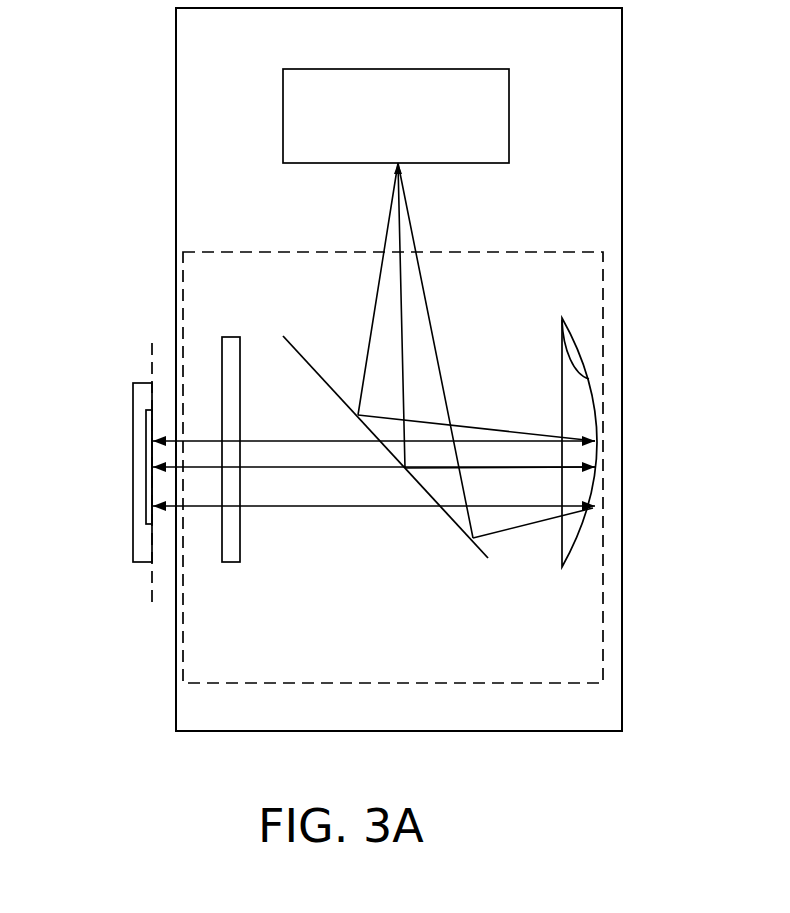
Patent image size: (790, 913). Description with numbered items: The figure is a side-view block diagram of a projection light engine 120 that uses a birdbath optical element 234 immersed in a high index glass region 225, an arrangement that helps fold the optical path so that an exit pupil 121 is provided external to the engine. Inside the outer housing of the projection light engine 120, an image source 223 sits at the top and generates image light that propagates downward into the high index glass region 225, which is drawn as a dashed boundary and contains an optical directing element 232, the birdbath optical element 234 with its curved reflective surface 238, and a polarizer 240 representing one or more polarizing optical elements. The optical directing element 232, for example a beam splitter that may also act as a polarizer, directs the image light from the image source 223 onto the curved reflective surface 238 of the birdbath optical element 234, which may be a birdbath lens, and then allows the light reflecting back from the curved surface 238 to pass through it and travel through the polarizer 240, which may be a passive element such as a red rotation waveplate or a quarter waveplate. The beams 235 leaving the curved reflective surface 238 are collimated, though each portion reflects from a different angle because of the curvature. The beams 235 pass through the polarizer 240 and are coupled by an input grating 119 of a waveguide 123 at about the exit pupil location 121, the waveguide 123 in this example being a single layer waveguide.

The projection light engine 120 is at (622, 153).
The high index glass region 225 is at (600, 252).
The image source 223 is at (397, 68).
The optical directing element 232 is at (303, 352).
The beams 235 is at (258, 439).
The polarizer 240 is at (240, 553).
The birdbath optical element 234 is at (602, 396).
The curved reflective surface 238 is at (562, 332).
The input grating 119 is at (146, 413).
The waveguide 123 is at (128, 448).
The exit pupil 121 is at (152, 607).